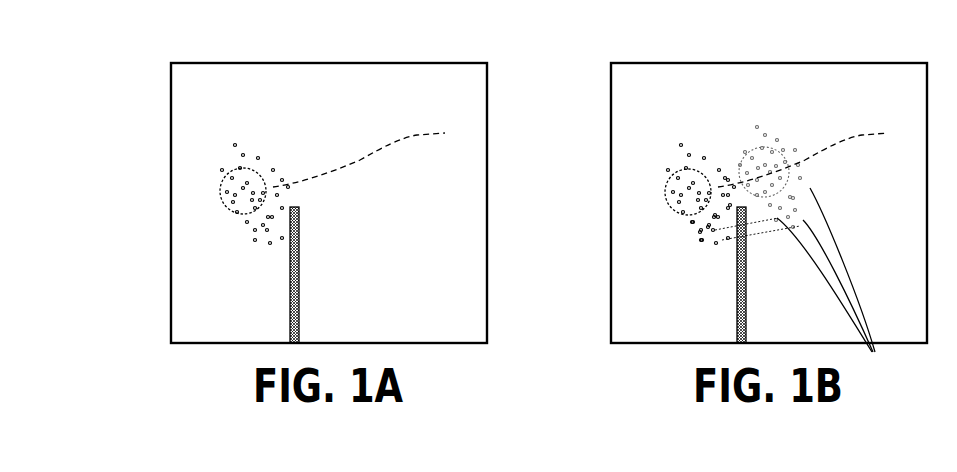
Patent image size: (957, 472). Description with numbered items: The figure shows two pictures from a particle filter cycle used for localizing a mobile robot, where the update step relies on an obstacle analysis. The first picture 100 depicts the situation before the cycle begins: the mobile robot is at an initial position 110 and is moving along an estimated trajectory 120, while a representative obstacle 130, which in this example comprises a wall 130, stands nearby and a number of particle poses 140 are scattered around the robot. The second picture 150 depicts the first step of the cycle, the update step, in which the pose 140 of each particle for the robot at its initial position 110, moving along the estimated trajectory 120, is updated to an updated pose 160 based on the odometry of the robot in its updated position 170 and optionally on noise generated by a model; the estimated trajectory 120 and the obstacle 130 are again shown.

In FIG. 1A, the picture 100 is at (171, 113).
In FIG. 1A, the initial position 110 is at (218, 188).
In FIG. 1B, the initial position 110 is at (664, 190).
In FIG. 1A, the estimated trajectory 120 is at (397, 138).
In FIG. 1B, the estimated trajectory 120 is at (842, 138).
In FIG. 1A, the obstacle 130 is at (290, 323).
In FIG. 1B, the obstacle 130 is at (737, 323).
In FIG. 1A, the particle poses 140 is at (273, 170).
In FIG. 1B, the particle poses 140 is at (718, 170).
In FIG. 1B, the picture 150 is at (611, 113).
In FIG. 1B, the updated pose 160 is at (872, 352).
In FIG. 1B, the updated position 170 is at (773, 148).